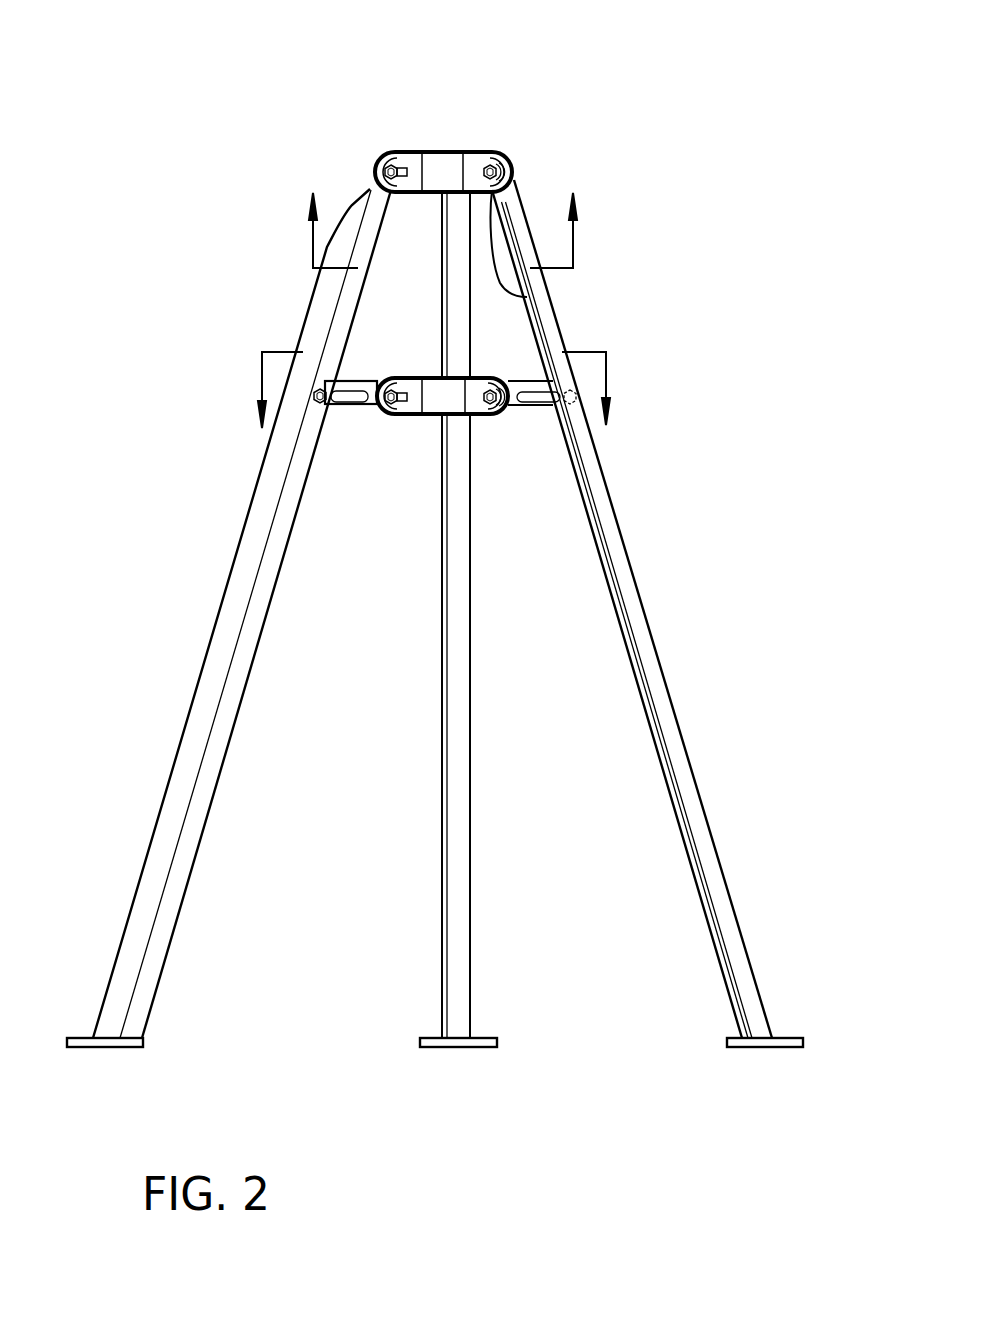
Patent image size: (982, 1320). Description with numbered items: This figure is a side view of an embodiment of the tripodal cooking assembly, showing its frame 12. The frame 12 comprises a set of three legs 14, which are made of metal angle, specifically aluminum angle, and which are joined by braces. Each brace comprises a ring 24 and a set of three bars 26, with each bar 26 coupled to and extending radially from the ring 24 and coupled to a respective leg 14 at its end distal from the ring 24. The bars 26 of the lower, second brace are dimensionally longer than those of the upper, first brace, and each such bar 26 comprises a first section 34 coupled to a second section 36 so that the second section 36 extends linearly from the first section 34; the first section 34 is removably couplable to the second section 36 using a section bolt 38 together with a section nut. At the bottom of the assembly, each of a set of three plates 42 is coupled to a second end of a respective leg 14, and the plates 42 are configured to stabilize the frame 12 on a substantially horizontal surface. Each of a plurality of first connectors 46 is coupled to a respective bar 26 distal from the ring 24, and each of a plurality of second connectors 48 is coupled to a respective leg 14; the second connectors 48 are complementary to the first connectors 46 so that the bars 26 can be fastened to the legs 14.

The frame 12 is at (704, 250).
The legs 14 is at (240, 650).
The ring 24 is at (452, 157).
The bars 26 is at (472, 177).
The first section 34 is at (365, 380).
The second section 36 is at (403, 414).
The section bolt 38 is at (490, 390).
The plates 42 is at (143, 1047).
The first connectors 46 is at (565, 402).
The second connectors 48 is at (527, 297).